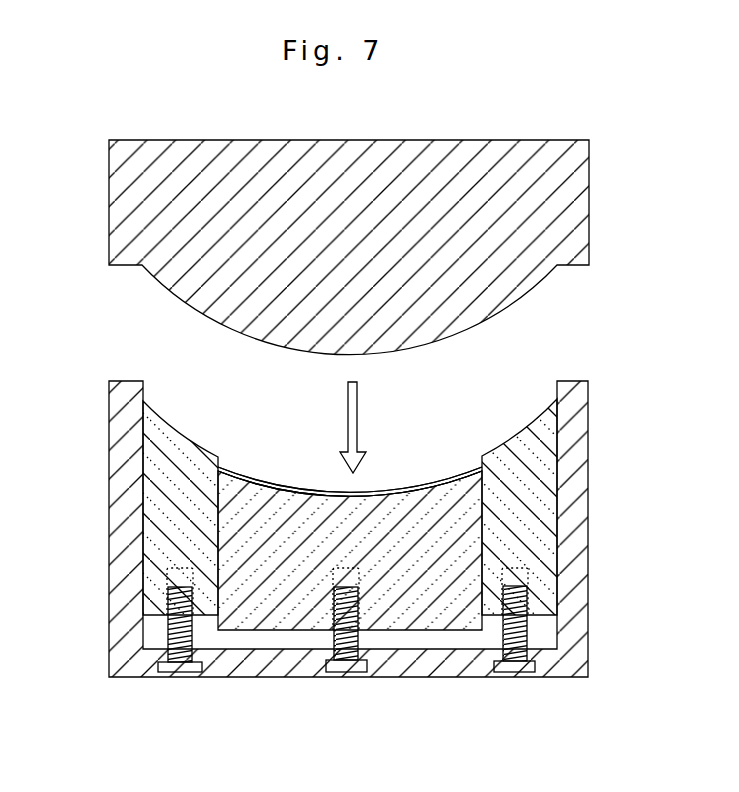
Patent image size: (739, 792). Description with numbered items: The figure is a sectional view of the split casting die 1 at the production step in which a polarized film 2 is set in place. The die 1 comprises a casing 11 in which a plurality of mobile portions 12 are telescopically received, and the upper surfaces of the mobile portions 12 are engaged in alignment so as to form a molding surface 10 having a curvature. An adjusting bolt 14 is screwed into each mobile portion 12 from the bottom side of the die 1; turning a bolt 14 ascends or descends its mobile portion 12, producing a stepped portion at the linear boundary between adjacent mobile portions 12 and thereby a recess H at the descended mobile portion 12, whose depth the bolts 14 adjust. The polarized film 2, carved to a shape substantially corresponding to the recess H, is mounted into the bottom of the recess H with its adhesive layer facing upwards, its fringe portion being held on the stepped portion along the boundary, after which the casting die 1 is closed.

The casting die 1 is at (363, 513).
The polarized film 2 is at (462, 472).
The molding surface 10 is at (284, 485).
The recess H is at (410, 479).
The casing 11 is at (587, 507).
The mobile portion 12 is at (172, 477).
The adjusting bolt 14 is at (165, 635).